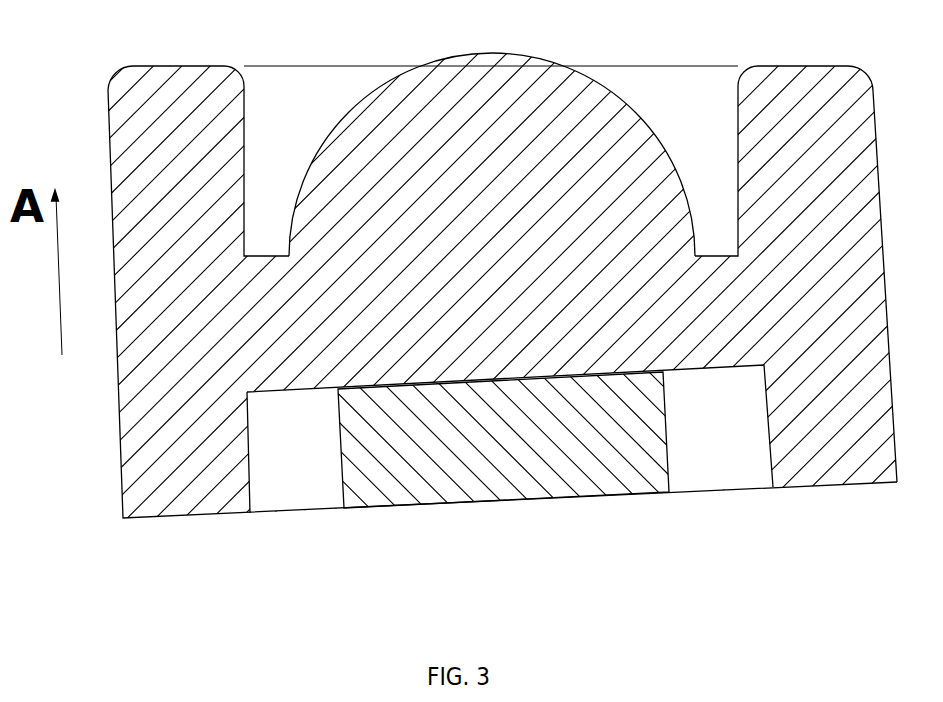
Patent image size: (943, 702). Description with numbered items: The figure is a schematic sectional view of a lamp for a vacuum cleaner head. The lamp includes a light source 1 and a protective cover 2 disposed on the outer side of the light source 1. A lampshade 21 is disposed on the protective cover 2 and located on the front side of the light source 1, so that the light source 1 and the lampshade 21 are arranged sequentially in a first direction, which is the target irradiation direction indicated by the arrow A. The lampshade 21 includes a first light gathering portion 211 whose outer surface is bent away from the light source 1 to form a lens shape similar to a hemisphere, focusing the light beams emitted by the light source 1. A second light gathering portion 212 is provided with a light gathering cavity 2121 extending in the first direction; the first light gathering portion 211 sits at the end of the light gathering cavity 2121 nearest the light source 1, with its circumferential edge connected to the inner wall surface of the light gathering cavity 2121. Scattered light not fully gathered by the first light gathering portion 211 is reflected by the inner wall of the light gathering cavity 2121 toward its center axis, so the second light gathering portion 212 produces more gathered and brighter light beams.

The light source 1 is at (520, 480).
The protective cover 2 is at (145, 175).
The lampshade 21 is at (499, 324).
The first light gathering portion 211 is at (482, 82).
The second light gathering portion 212 is at (774, 143).
The light gathering cavity 2121 is at (707, 193).